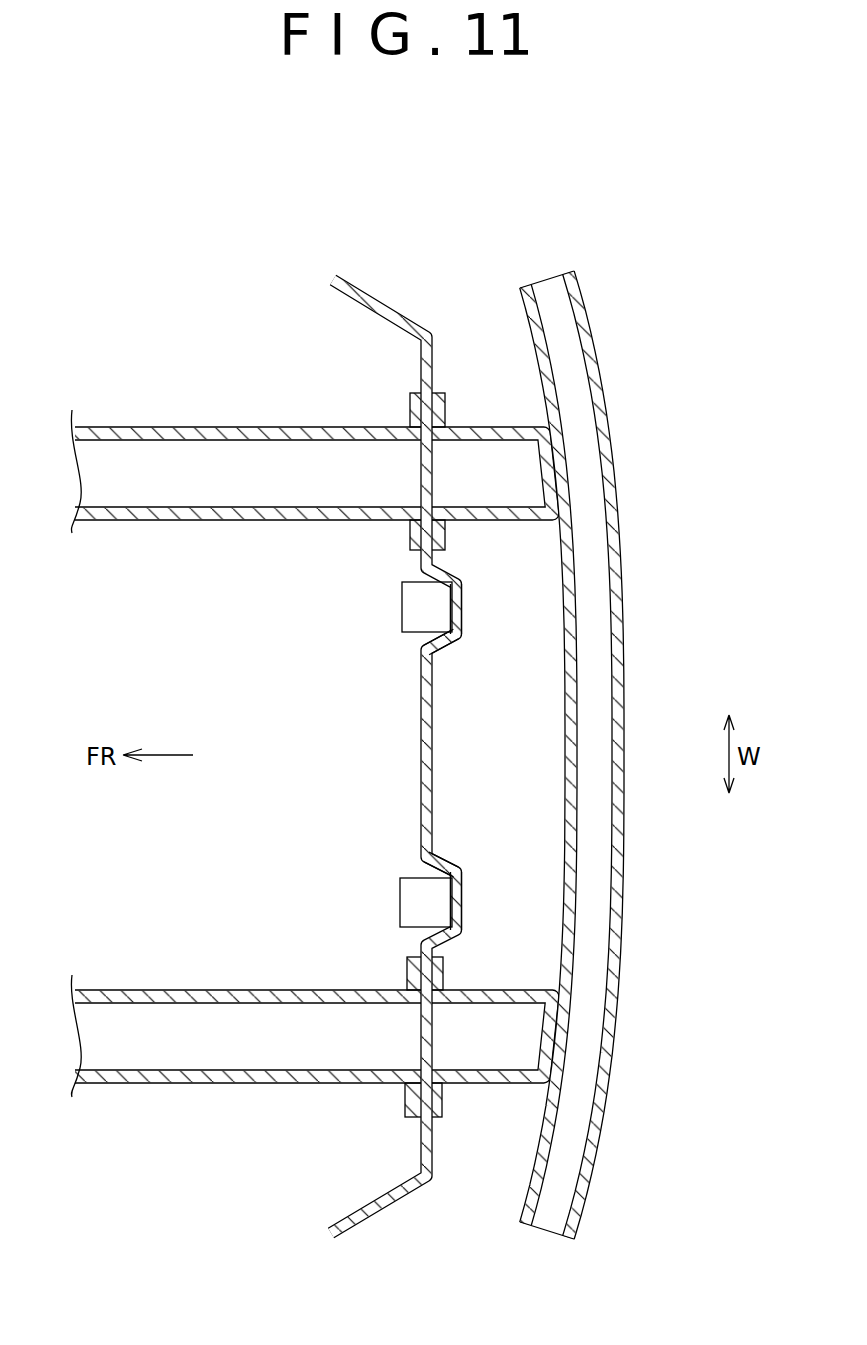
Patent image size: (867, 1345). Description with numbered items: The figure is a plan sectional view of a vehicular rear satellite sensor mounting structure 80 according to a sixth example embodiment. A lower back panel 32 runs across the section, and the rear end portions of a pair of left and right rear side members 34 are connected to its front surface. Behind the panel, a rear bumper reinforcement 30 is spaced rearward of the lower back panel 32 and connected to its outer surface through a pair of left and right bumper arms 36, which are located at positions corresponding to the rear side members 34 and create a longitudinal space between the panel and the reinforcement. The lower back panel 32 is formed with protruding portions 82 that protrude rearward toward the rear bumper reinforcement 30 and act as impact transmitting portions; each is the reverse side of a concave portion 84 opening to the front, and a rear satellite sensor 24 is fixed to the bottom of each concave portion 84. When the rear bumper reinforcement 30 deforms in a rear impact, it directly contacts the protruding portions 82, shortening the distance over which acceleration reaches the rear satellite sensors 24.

The rear satellite sensor 24 is at (402, 607).
The rear bumper reinforcement 30 is at (623, 745).
The lower back panel 32 is at (433, 717).
The rear side member 34 is at (240, 522).
The bumper arm 36 is at (502, 523).
The vehicular rear satellite sensor mounting structure 80 is at (610, 709).
The protruding portion 82 is at (455, 615).
The concave portion 84 is at (452, 634).